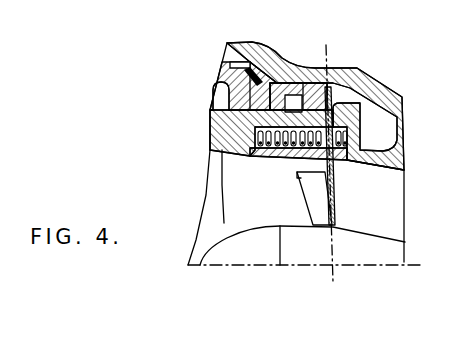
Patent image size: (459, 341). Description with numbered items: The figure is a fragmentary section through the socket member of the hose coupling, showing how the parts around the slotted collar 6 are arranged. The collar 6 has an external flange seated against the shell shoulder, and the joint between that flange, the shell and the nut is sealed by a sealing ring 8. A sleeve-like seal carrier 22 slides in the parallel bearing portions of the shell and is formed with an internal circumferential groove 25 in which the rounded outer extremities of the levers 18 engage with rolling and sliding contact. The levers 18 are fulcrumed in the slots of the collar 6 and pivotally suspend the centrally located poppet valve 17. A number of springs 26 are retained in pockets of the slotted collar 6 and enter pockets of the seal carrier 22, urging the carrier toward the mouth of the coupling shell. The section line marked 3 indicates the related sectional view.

The internal circumferential groove 25 is at (277, 60).
The sealing ring 8 is at (221, 69).
The slotted collar 6 is at (222, 124).
The springs 26 is at (248, 134).
The levers 18 is at (308, 185).
The seal carrier 22 is at (358, 167).
The poppet valve 17 is at (304, 217).
The section line 3 is at (326, 45).